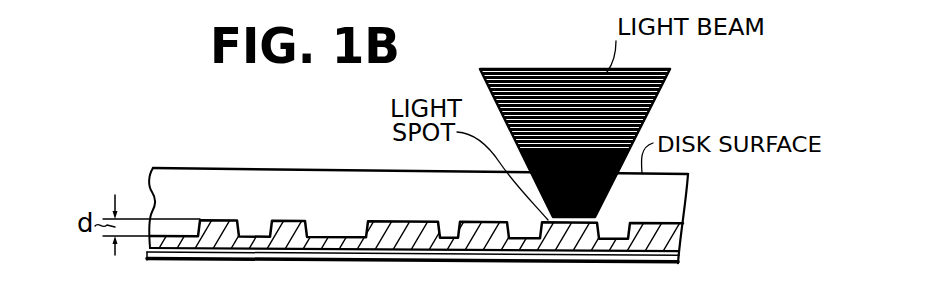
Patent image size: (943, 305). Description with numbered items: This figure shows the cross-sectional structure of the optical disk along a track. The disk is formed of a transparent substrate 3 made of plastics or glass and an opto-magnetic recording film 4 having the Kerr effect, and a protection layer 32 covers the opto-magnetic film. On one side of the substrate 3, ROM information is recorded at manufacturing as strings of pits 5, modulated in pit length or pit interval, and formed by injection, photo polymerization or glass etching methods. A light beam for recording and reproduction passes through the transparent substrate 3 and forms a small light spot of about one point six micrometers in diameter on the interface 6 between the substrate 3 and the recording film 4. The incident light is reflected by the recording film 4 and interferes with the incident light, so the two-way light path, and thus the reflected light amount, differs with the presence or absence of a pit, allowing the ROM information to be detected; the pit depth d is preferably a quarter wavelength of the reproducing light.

The transparent substrate 3 is at (658, 192).
The opto-magnetic recording film 4 is at (670, 240).
The pits 5 is at (392, 221).
The interface 6 is at (663, 224).
The protection layer 32 is at (678, 258).